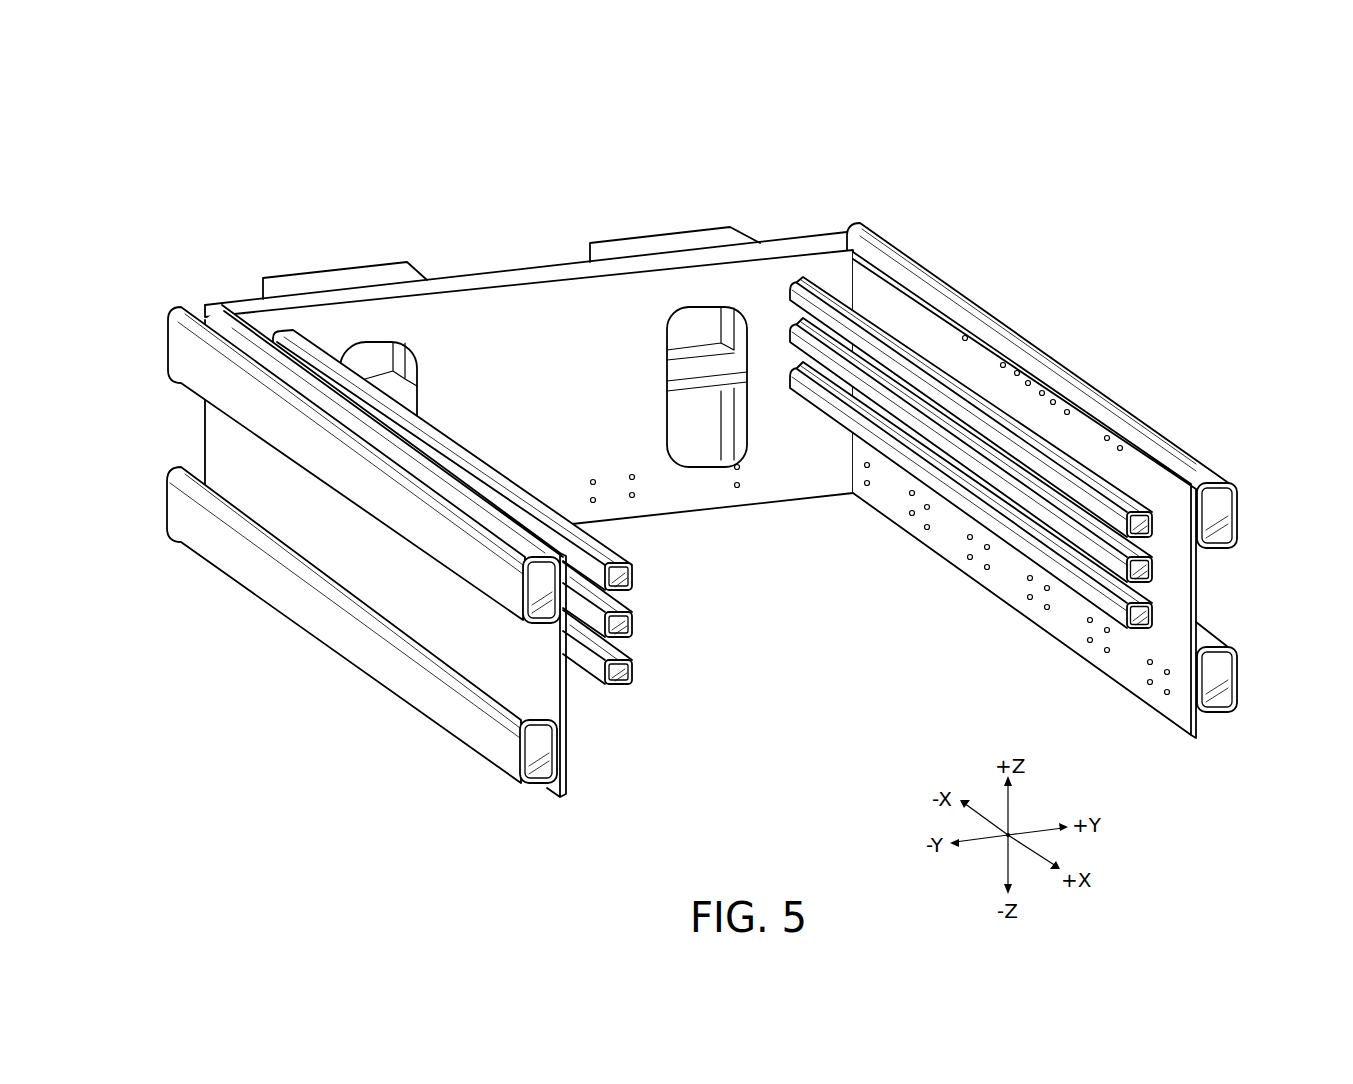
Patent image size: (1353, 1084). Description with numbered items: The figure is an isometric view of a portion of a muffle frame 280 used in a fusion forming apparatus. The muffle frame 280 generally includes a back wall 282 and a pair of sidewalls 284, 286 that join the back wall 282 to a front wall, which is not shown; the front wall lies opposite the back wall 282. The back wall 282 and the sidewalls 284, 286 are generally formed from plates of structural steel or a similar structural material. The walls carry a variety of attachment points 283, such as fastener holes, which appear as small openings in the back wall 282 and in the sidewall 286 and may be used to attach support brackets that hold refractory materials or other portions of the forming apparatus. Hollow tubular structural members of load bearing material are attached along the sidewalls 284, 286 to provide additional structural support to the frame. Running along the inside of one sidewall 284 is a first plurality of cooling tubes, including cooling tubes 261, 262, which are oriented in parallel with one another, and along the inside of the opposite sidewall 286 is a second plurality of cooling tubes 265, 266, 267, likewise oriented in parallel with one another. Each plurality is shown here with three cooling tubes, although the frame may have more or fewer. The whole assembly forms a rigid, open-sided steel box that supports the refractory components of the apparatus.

The muffle frame 280 is at (701, 455).
The back wall 282 is at (517, 268).
The attachment points 283 is at (633, 500).
The sidewall 284 is at (566, 722).
The sidewall 286 is at (1153, 698).
The cooling tube 261 is at (633, 622).
The cooling tube 262 is at (633, 670).
The second cooling tube 265 is at (790, 292).
The cooling tube 266 is at (802, 400).
The cooling tube 267 is at (782, 334).